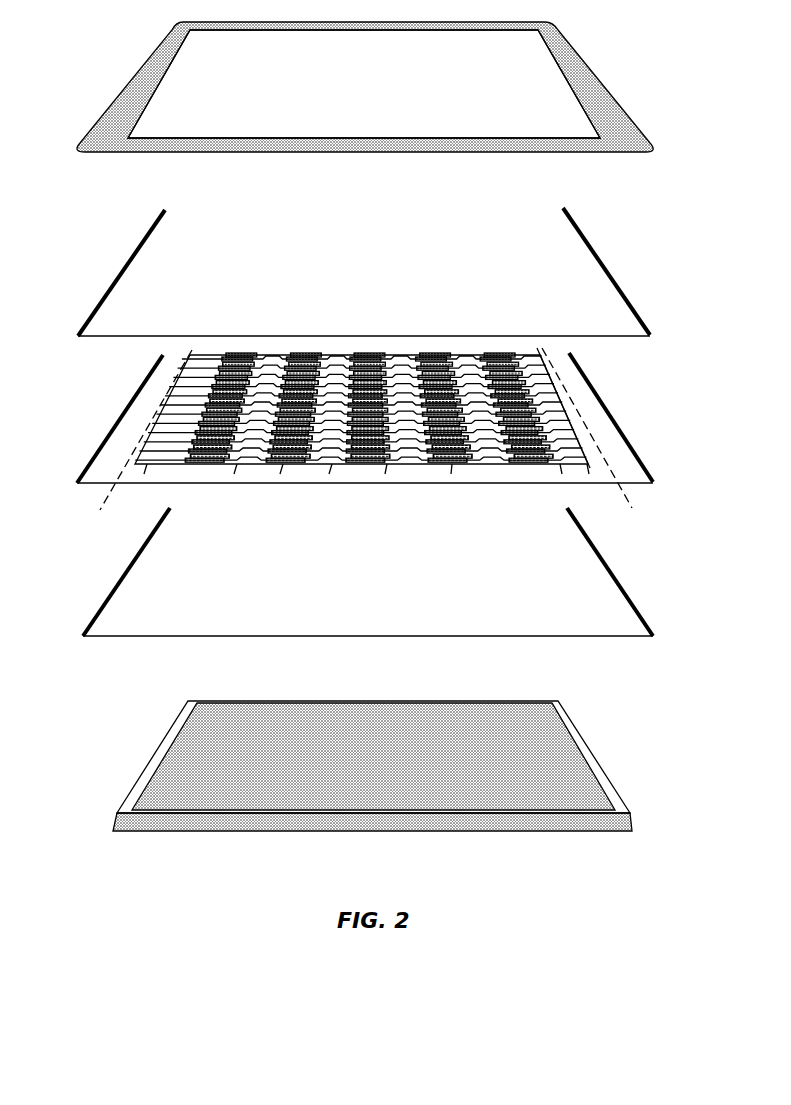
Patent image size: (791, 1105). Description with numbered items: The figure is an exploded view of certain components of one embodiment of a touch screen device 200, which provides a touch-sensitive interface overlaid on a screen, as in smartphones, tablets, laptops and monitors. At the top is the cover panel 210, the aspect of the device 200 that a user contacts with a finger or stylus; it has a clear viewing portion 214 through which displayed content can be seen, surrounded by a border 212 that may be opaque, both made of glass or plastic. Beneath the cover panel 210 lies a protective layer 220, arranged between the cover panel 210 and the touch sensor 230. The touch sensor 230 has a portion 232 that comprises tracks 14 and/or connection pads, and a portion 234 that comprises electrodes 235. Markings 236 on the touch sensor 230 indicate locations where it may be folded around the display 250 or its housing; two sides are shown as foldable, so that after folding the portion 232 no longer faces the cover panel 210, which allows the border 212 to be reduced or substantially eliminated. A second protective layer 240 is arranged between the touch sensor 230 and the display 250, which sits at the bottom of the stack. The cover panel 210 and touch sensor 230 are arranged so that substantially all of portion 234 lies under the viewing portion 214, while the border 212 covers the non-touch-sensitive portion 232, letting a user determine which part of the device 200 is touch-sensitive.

The touch screen device 200 is at (644, 62).
The cover panel 210 is at (128, 80).
The border 212 is at (565, 45).
The viewing portion 214 is at (517, 115).
The protective layer 220 is at (122, 268).
The touch sensor 230 is at (117, 418).
The portion 232 is at (575, 382).
The portion 234 is at (587, 456).
The electrodes 235 is at (285, 472).
The markings 236 is at (105, 491).
The tracks 14 is at (172, 354).
The protective layer 240 is at (128, 562).
The display 250 is at (150, 760).